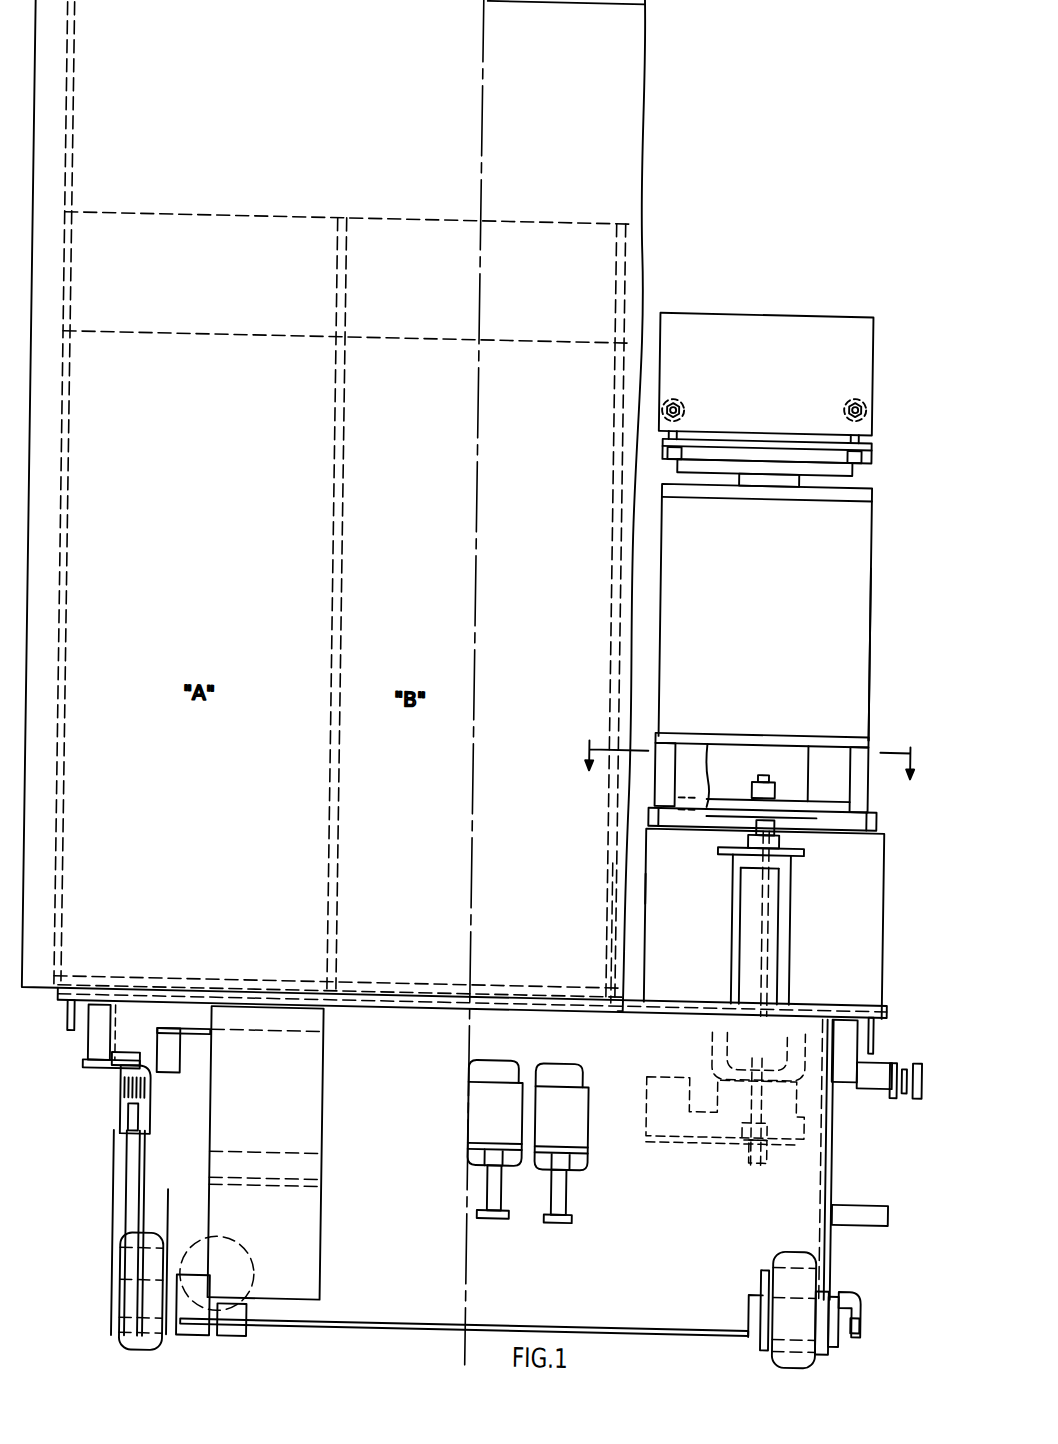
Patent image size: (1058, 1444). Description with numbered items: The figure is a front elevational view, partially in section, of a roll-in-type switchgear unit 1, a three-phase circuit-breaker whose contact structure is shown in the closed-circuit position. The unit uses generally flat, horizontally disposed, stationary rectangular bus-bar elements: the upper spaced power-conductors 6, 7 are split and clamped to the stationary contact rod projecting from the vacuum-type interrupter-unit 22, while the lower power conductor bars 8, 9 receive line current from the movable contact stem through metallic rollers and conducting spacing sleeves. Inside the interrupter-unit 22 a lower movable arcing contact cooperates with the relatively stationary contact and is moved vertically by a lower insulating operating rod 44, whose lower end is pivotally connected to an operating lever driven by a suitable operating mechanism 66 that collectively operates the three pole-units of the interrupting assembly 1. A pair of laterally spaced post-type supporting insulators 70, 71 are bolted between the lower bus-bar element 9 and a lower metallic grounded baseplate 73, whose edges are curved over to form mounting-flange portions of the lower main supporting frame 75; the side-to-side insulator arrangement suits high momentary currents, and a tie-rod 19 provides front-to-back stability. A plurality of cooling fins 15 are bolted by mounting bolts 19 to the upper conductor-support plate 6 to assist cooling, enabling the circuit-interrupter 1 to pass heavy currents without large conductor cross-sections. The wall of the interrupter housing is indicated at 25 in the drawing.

The roll-in-type switchgear unit 1 is at (822, 272).
The cooling fins 15 is at (729, 309).
The mounting bolts 19 is at (675, 428).
The upper power conductor 6 is at (750, 435).
The upper power conductor 7 is at (674, 467).
The vacuum-type interrupter-unit 22 is at (912, 661).
The housing wall 25 is at (871, 694).
The lower power conductor bar 8 is at (751, 734).
The lower power conductor bar 9 is at (747, 795).
The post-type supporting insulator 71 is at (647, 881).
The insulating operating rod 44 is at (793, 896).
The post-type supporting insulator 70 is at (886, 890).
The baseplate 73 is at (700, 1011).
The lower main supporting frame 75 is at (878, 1117).
The operating mechanism 66 is at (683, 1190).